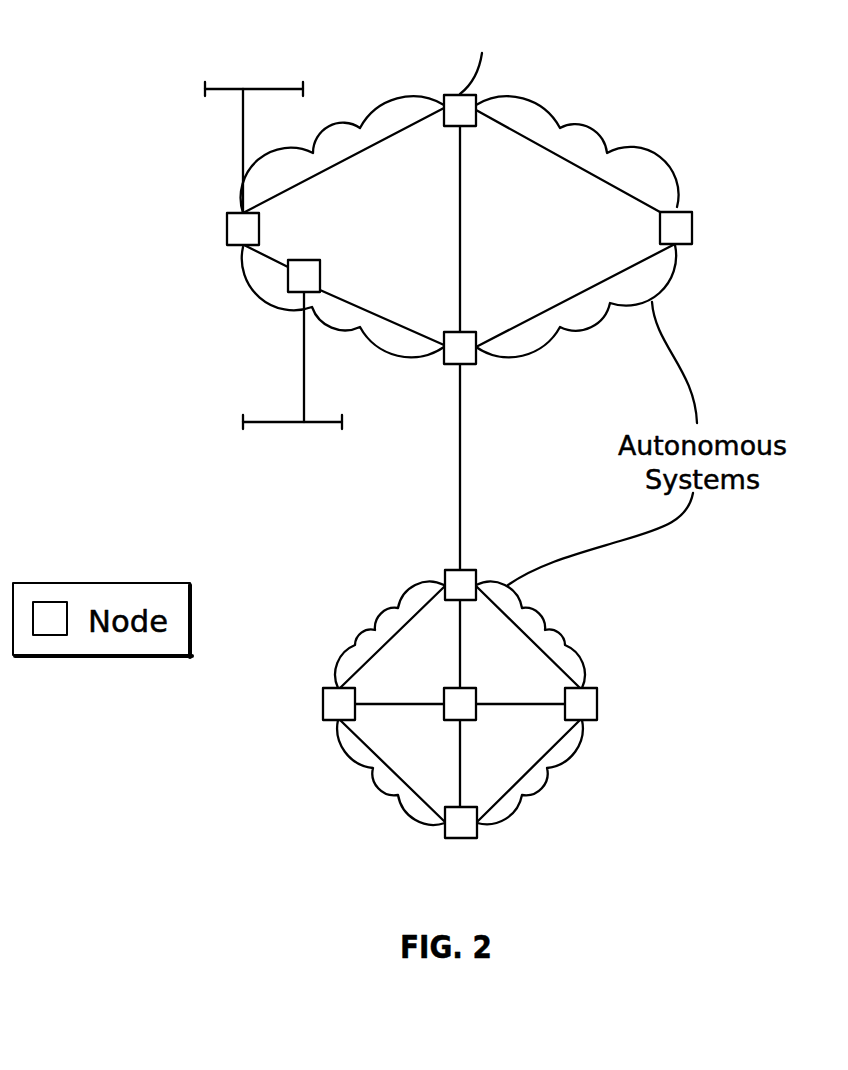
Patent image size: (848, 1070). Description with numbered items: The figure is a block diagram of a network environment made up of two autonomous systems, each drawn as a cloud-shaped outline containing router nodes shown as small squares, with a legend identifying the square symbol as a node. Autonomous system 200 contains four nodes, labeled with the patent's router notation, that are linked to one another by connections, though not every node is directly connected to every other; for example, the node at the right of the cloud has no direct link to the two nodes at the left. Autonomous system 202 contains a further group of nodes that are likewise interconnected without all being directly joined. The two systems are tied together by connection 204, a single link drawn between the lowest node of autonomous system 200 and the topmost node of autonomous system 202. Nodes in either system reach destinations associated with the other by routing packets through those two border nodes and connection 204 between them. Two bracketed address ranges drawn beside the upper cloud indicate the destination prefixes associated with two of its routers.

The autonomous system 200 is at (588, 131).
The autonomous system 202 is at (538, 620).
The connection 204 is at (460, 470).